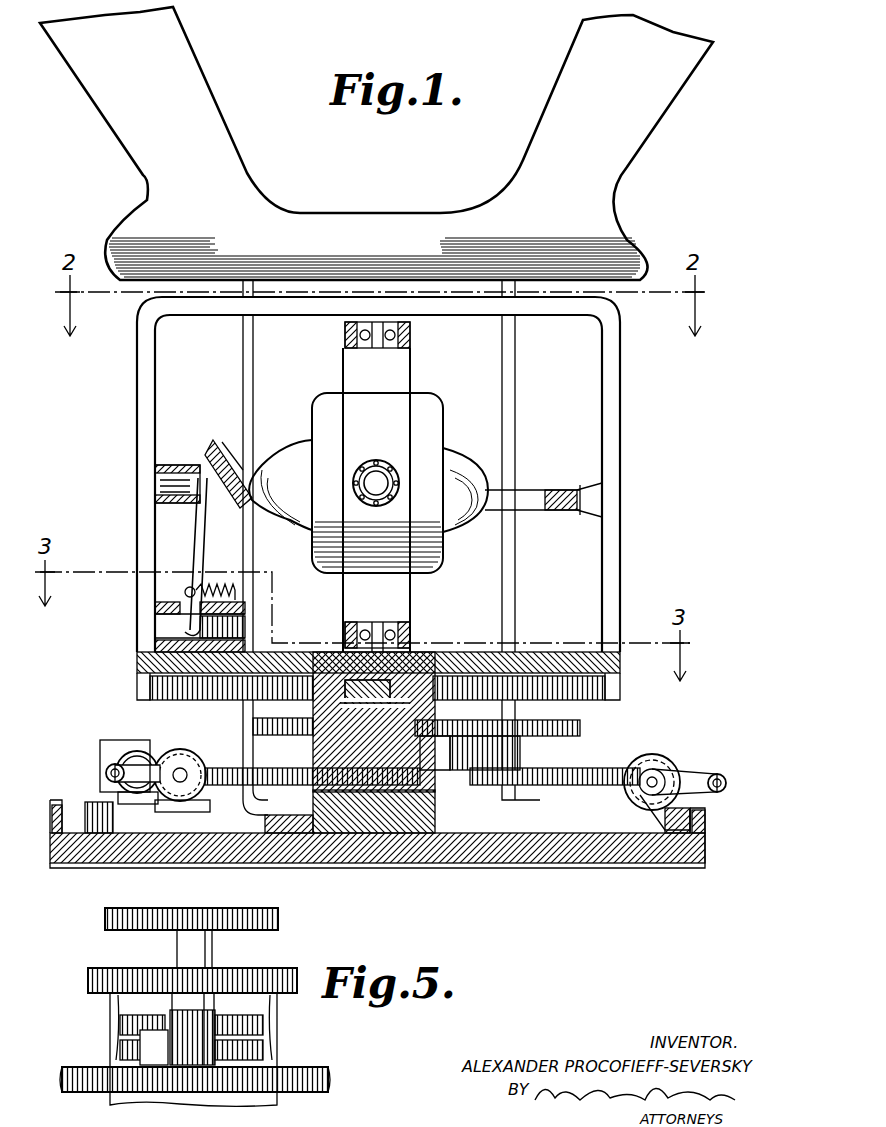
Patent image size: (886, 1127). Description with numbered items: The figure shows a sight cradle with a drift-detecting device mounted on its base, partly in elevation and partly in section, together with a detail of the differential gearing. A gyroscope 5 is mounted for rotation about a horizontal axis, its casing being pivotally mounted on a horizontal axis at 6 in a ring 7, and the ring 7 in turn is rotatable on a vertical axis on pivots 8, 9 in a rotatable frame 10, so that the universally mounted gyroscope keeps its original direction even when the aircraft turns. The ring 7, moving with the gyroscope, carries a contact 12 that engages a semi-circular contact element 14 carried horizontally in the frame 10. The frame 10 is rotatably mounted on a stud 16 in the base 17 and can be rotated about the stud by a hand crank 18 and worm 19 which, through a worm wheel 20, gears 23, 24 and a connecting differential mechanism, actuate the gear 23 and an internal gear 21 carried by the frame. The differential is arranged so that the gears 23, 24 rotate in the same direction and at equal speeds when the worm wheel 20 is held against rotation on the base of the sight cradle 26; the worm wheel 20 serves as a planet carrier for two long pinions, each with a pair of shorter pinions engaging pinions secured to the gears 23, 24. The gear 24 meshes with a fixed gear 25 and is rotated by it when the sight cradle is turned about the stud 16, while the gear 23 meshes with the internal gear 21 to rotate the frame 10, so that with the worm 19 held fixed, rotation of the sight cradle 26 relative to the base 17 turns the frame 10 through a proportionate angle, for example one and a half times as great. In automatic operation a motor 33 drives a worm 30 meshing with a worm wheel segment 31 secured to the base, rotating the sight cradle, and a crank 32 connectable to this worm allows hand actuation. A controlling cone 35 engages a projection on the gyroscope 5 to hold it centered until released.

In FIG. 1, the gyroscope 5 is at (428, 410).
In FIG. 1, the horizontal pivot axis 6 is at (398, 480).
In FIG. 1, the ring 7 is at (410, 346).
In FIG. 1, the pivot 8 is at (375, 320).
In FIG. 1, the pivot 9 is at (356, 646).
In FIG. 1, the rotatable frame 10 is at (615, 424).
In FIG. 1, the contact 12 is at (100, 745).
In FIG. 1, the semi-circular contact element 14 is at (536, 490).
In FIG. 1, the stud 16 is at (415, 775).
In FIG. 1, the base 17 is at (486, 864).
In FIG. 1, the hand crank 18 is at (724, 778).
In FIG. 1, the worm 19 is at (674, 762).
In FIG. 1, the worm wheel 20 is at (612, 776).
In FIG. 5, the worm wheel 20 is at (82, 1067).
In FIG. 1, the internal gear 21 is at (287, 700).
In FIG. 1, the gear 23 is at (605, 692).
In FIG. 5, the gear 23 is at (115, 908).
In FIG. 1, the gear 24 is at (600, 730).
In FIG. 5, the gear 24 is at (96, 968).
In FIG. 1, the fixed gear 25 is at (466, 738).
In FIG. 1, the sight cradle 26 is at (625, 156).
In FIG. 1, the worm 30 is at (180, 750).
In FIG. 1, the worm wheel segment 31 is at (228, 766).
In FIG. 1, the crank 32 is at (106, 772).
In FIG. 1, the motor 33 is at (130, 750).
In FIG. 1, the controlling cone 35 is at (225, 457).